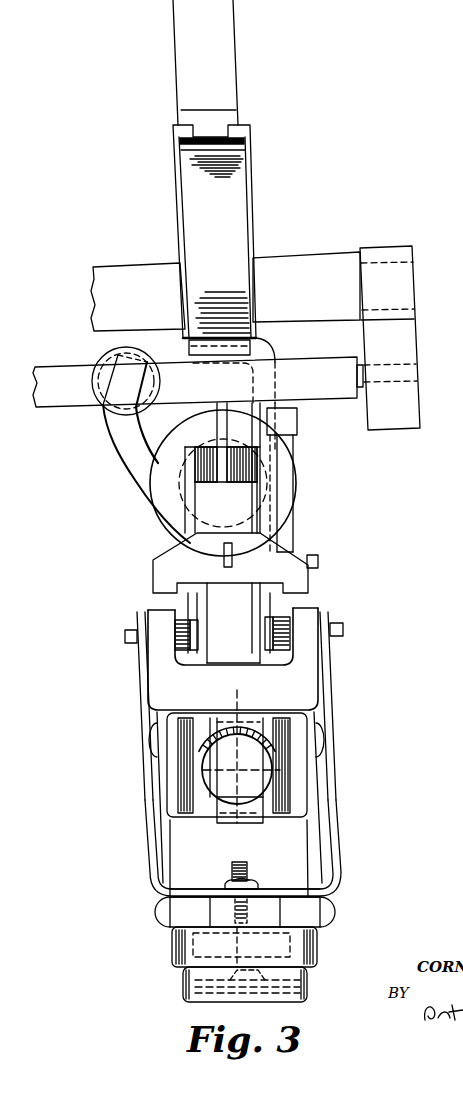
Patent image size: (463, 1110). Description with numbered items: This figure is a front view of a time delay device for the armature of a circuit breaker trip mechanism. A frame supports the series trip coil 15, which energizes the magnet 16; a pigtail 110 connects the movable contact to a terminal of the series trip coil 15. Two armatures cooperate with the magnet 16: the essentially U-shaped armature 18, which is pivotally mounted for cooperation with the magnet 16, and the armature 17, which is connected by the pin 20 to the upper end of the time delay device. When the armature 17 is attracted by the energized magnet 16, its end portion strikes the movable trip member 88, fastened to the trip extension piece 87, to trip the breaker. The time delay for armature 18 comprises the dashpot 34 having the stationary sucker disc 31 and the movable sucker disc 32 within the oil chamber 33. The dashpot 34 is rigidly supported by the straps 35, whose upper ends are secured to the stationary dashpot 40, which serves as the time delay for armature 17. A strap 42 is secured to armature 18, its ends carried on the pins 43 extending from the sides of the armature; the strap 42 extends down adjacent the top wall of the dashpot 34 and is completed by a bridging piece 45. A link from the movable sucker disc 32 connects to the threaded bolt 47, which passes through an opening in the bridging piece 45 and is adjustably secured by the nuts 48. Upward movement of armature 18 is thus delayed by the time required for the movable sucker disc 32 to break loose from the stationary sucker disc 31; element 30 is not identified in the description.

The pigtail 110 is at (228, 217).
The movable trip member 88 is at (222, 453).
The series trip coil 15 is at (170, 503).
The magnet 16 is at (203, 570).
The trip extension piece 87 is at (318, 560).
The armature 17 is at (237, 612).
The pin 20 is at (307, 620).
The pins 43 is at (125, 636).
The armature 18 is at (178, 690).
The strap 42 is at (327, 743).
The straps 35 is at (308, 782).
The threaded bolt 47 is at (250, 880).
The nuts 48 is at (259, 883).
The stationary dashpot 40 is at (200, 831).
The bridging piece 45 is at (195, 892).
The dashpot 34 is at (315, 938).
The movable sucker disc 32 is at (307, 957).
The stationary sucker disc 31 is at (300, 980).
The cup 30 is at (305, 992).
The oil chamber 33 is at (202, 973).